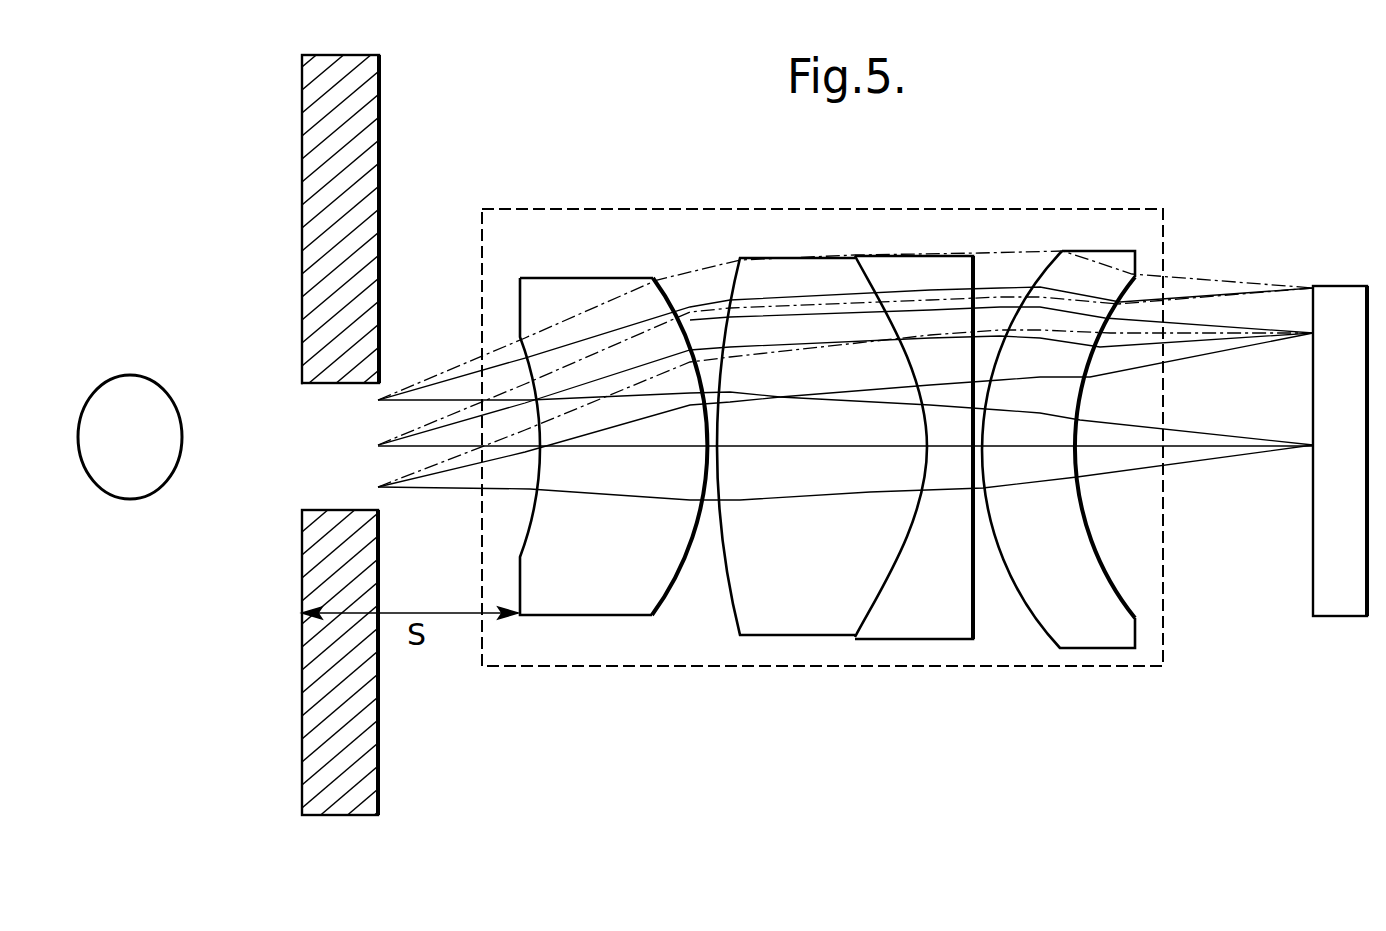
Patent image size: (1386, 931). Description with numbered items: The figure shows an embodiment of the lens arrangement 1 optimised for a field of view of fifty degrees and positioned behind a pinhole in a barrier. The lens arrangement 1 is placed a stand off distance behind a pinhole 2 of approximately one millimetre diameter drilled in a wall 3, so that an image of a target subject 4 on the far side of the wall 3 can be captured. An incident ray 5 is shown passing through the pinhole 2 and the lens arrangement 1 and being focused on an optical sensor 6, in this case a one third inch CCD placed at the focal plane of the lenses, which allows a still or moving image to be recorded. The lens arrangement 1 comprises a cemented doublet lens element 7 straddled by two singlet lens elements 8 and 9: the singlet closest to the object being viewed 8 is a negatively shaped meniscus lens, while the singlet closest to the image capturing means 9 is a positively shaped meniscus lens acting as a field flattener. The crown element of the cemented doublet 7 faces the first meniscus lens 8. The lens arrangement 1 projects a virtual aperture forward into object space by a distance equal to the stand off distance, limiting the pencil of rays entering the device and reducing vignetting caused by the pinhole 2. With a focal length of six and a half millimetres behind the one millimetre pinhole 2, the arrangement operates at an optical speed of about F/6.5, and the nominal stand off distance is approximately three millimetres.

The lens arrangement 1 is at (742, 209).
The pinhole 2 is at (318, 470).
The wall 3 is at (302, 86).
The target subject 4 is at (128, 376).
The incident ray 5 is at (1220, 460).
The optical sensor 6 is at (1340, 286).
The cemented doublet lens element 7 is at (907, 256).
The first meniscus lens 8 is at (600, 278).
The second meniscus lens 9 is at (1105, 251).